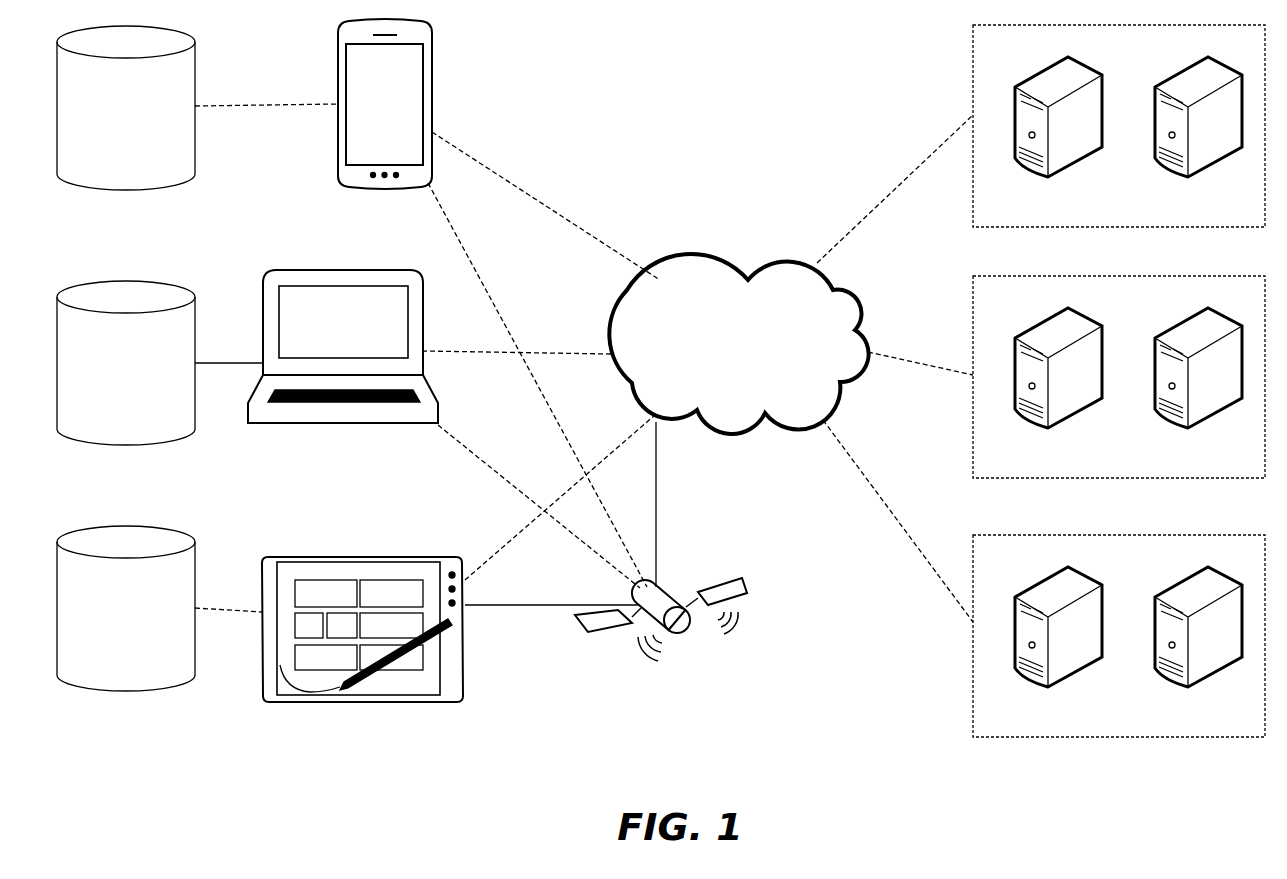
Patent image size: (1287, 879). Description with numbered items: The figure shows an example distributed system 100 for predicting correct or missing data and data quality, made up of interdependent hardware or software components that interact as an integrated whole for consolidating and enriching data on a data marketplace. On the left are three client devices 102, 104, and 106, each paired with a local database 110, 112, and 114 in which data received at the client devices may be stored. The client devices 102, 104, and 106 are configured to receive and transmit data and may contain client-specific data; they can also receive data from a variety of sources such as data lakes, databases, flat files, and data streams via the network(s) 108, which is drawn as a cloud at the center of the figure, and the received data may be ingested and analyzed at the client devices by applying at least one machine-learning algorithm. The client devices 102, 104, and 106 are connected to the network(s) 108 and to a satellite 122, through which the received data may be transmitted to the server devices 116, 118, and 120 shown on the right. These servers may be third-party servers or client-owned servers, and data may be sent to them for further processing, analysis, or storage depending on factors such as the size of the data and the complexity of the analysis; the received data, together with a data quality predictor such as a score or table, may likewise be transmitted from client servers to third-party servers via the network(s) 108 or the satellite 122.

The system 100 is at (755, 72).
The client device 102 is at (404, 124).
The client device 104 is at (367, 474).
The client device 106 is at (386, 754).
The network(s) 108 is at (761, 388).
The local database 110 is at (146, 119).
The local database 112 is at (146, 375).
The local database 114 is at (146, 620).
The server device 116 is at (1142, 214).
The server device 118 is at (1142, 465).
The server device 120 is at (1142, 724).
The satellite 122 is at (686, 724).